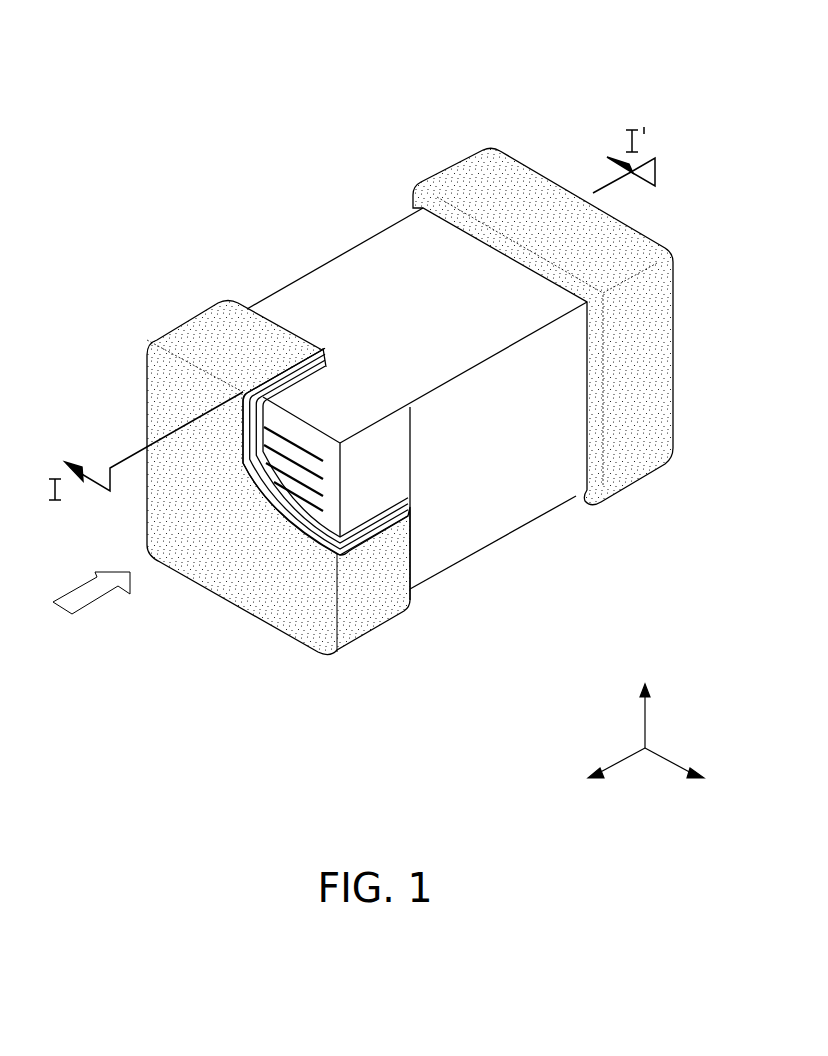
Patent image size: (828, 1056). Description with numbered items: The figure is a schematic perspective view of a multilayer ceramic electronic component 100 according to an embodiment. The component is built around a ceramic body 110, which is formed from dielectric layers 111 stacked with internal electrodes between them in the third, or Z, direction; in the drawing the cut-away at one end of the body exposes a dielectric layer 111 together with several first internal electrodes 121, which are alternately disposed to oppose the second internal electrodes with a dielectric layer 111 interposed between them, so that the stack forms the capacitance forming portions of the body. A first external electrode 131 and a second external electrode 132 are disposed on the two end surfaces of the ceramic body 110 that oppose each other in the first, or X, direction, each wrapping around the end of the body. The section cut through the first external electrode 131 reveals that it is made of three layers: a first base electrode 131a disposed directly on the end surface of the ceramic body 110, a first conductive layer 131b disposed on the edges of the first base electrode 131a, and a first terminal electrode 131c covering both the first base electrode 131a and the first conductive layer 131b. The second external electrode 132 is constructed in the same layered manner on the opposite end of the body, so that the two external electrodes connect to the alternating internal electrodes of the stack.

The multilayer ceramic electronic component 100 is at (222, 26).
The ceramic body 110 is at (362, 427).
The dielectric layer 111 is at (290, 473).
The first internal electrode 121 is at (300, 488).
The first external electrode 131 is at (97, 230).
The first base electrode 131a is at (287, 385).
The first conductive layer 131b is at (290, 372).
The first terminal electrode 131c is at (331, 349).
The second external electrode 132 is at (515, 172).